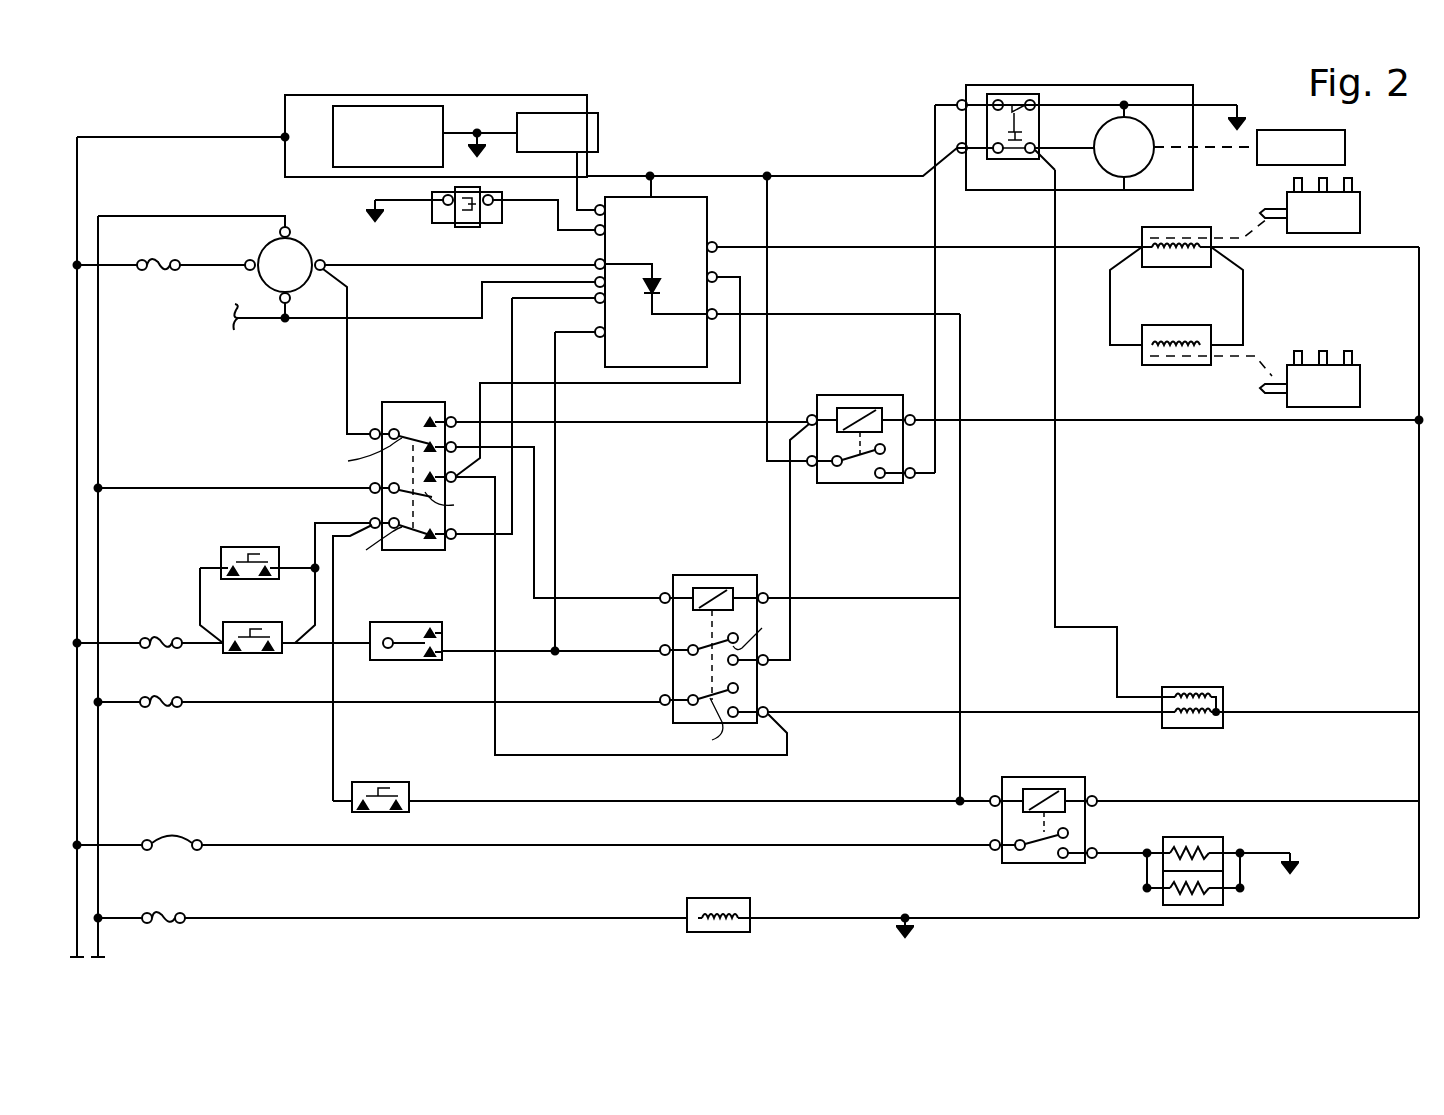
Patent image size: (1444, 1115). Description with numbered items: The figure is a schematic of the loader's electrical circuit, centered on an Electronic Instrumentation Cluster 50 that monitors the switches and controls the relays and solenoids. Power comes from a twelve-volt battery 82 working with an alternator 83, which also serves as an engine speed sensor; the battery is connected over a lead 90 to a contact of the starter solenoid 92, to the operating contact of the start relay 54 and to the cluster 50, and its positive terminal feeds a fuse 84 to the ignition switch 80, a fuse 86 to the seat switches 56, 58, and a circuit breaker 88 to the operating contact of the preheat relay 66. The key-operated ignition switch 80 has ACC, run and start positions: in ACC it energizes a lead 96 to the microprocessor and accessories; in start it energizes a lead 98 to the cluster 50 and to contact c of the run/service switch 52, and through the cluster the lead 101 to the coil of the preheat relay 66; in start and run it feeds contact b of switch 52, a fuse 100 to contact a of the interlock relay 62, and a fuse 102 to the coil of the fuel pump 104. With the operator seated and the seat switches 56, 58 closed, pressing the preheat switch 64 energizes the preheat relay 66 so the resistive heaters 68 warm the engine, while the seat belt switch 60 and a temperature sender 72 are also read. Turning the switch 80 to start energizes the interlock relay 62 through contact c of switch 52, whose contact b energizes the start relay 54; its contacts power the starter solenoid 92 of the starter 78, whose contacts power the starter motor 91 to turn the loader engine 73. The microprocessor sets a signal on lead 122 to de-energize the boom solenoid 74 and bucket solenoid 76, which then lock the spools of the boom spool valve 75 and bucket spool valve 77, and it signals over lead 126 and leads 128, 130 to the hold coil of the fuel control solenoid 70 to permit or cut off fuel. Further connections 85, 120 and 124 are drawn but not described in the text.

The Electronic Instrumentation Cluster 50 is at (712, 219).
The run/service switch 52 is at (452, 601).
The start relay 54 is at (893, 483).
The seat switch 56 is at (234, 547).
The seat switch 58 is at (240, 655).
The seat belt switch 60 is at (403, 660).
The interlock relay 62 is at (673, 720).
The preheat switch 64 is at (394, 780).
The preheat relay 66 is at (1068, 777).
The resistive heaters 68 is at (1190, 837).
The fuel control solenoid 70 is at (1182, 688).
The sender 72 is at (445, 223).
The loader engine 73 is at (535, 202).
The boom solenoid 74 is at (1189, 281).
The first spool valve 75 is at (1360, 222).
The bucket solenoid 76 is at (1155, 365).
The second spool valve 77 is at (1360, 388).
The starter 78 is at (1193, 185).
The ignition switch 80 is at (313, 250).
The battery 82 is at (443, 113).
The alternator 83 is at (598, 130).
The fuse 84 is at (148, 272).
The alternator lead 85 is at (580, 195).
The fuse 86 is at (165, 636).
The circuit breaker 88 is at (178, 835).
The lead 90 is at (285, 152).
The starter motor 91 is at (1124, 178).
The starter solenoid 92 is at (1040, 136).
The lead 96 is at (285, 320).
The lead 98 is at (374, 268).
The fuse 100 is at (158, 712).
The lead 101 is at (963, 560).
The fuse 102 is at (165, 912).
The fuel pump 104 is at (718, 898).
The lead 120 is at (580, 302).
The lead 122 is at (830, 247).
The lead 124 is at (557, 440).
The lead 126 is at (740, 303).
The lead 128 is at (595, 750).
The lead 130 is at (825, 705).